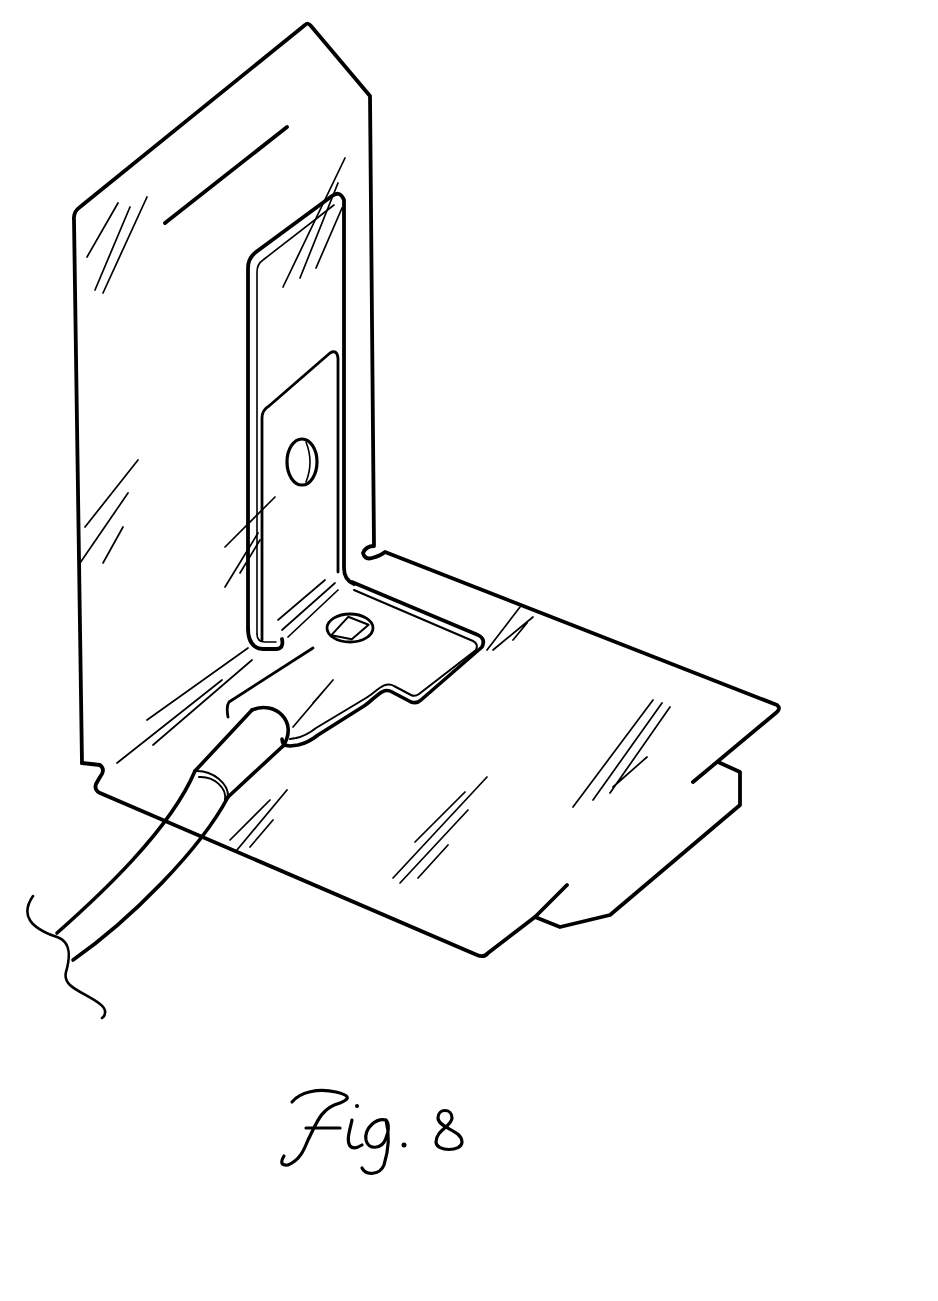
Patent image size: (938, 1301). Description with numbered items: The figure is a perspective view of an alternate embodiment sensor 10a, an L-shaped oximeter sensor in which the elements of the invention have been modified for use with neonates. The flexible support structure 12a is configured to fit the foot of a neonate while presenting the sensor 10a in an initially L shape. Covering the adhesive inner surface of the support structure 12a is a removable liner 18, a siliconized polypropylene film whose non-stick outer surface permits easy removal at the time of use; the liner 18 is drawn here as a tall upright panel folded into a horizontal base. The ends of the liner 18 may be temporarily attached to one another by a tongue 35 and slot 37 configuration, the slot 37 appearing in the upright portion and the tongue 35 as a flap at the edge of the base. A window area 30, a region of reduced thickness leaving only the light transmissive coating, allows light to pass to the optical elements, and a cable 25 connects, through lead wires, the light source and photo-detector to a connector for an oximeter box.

The sensor 10a is at (458, 498).
The removable liner 18 is at (325, 130).
The slot 37 is at (242, 157).
The support structure 12a is at (322, 323).
The window area 30 is at (302, 462).
The tongue 35 is at (672, 833).
The cable 25 is at (140, 875).